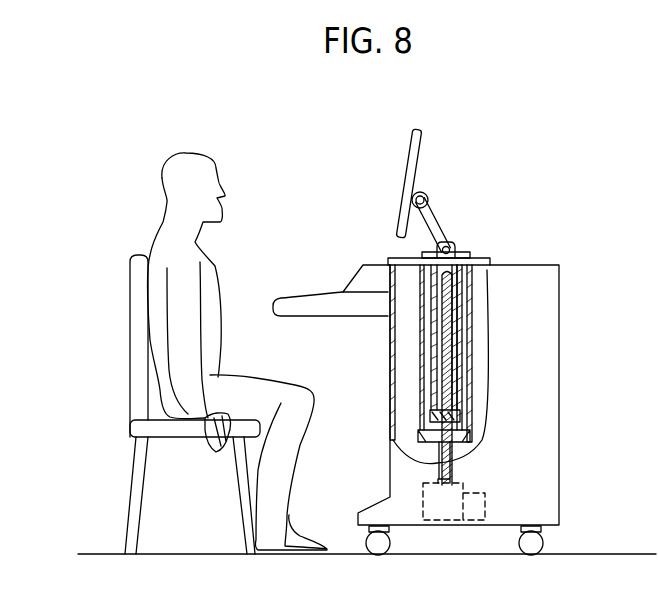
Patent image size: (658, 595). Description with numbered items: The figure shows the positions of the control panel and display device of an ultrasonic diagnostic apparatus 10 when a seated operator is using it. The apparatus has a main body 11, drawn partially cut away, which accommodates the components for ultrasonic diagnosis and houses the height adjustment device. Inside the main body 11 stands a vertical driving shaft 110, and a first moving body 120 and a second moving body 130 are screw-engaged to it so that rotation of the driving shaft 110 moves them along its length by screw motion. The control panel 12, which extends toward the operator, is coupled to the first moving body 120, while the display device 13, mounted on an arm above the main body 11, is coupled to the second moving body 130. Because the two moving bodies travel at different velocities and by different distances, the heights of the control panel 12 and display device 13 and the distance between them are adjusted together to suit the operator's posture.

The ultrasonic diagnostic apparatus 10 is at (508, 214).
The main body 11 is at (548, 452).
The control panel 12 is at (332, 303).
The display device 13 is at (405, 178).
The driving shaft 110 is at (447, 337).
The first moving body 120 is at (476, 378).
The second moving body 130 is at (465, 297).